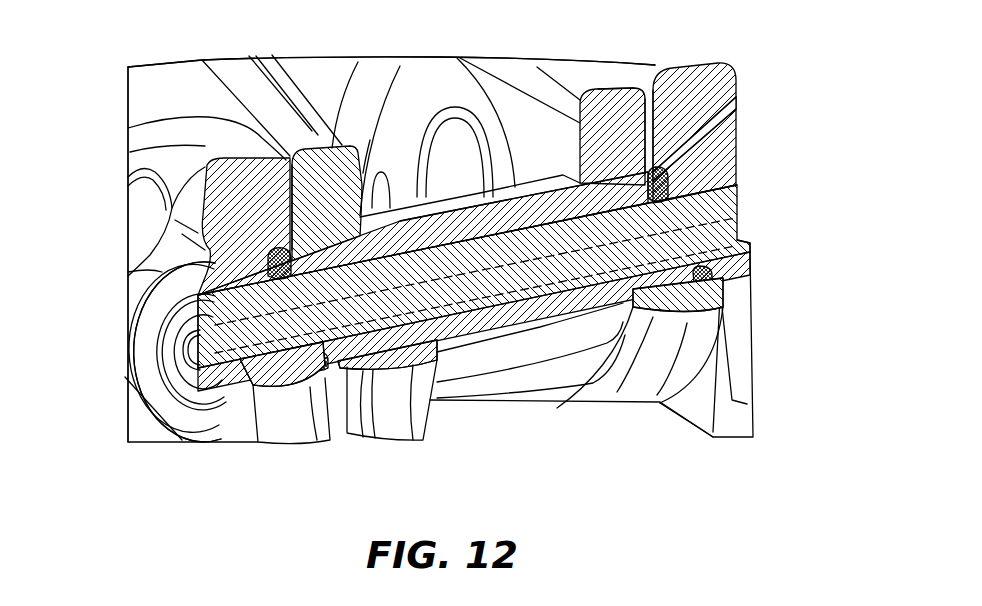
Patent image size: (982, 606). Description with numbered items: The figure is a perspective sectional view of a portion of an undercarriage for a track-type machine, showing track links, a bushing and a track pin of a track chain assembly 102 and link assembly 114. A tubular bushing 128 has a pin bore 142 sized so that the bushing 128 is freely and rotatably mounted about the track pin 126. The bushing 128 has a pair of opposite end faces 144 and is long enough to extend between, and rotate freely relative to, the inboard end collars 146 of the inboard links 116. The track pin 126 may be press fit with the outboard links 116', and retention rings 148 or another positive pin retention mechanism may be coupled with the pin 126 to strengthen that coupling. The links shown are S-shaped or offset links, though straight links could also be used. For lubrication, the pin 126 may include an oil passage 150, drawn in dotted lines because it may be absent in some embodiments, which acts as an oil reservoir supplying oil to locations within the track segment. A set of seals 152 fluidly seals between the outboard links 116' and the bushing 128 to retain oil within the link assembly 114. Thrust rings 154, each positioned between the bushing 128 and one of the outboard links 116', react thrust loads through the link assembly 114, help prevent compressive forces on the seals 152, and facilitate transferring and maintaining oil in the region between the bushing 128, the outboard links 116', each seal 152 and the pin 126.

The track chain assembly 102 is at (698, 44).
The link assembly 114 is at (439, 248).
The inboard link 116 is at (421, 187).
The outboard link 116' is at (472, 287).
The track pin 126 is at (740, 196).
The tubular bushing 128 is at (487, 390).
The pin bore 142 is at (520, 228).
The end faces 144 is at (290, 250).
The inboard end collars 146 is at (332, 150).
The retention rings 148 is at (165, 270).
The oil passage 150 is at (468, 283).
The seals 152 is at (281, 251).
The thrust rings 154 is at (733, 232).